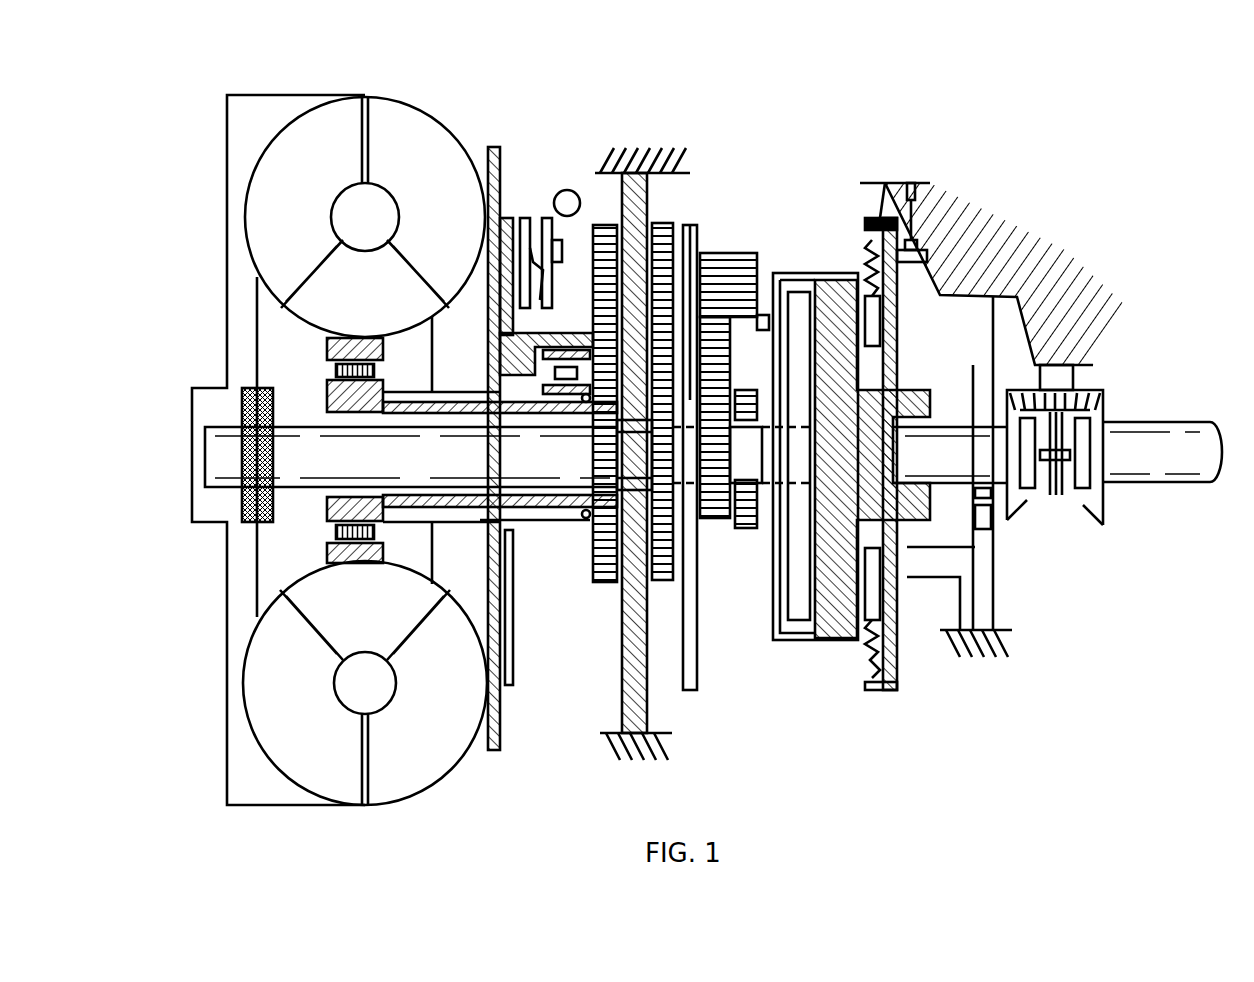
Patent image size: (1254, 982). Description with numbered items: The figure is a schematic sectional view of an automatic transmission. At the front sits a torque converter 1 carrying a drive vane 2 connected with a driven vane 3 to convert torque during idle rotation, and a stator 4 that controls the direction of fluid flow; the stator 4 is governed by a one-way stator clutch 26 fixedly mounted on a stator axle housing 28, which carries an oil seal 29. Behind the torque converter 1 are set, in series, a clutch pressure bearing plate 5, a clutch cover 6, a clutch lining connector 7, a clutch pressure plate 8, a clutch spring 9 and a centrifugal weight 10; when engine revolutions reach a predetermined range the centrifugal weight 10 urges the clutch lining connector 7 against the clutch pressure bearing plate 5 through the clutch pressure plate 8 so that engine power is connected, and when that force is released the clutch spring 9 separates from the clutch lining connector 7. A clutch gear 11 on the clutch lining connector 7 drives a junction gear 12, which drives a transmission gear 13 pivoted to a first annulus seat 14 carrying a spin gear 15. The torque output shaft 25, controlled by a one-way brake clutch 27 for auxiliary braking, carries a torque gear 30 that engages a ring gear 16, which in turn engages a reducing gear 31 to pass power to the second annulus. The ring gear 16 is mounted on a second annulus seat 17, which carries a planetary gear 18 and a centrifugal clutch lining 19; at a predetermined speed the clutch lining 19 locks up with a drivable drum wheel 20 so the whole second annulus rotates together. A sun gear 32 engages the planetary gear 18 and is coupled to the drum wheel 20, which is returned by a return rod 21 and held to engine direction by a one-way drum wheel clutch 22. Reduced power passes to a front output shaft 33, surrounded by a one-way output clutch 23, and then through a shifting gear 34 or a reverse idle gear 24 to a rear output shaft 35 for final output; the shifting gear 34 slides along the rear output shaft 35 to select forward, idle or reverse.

The torque converter 1 is at (242, 333).
The drive vane 2 is at (443, 211).
The driven vane 3 is at (297, 211).
The stator 4 is at (372, 306).
The clutch pressure bearing plate 5 is at (500, 345).
The clutch cover 6 is at (506, 218).
The clutch lining connector 7 is at (485, 240).
The clutch pressure plate 8 is at (527, 218).
The clutch spring 9 is at (540, 275).
The centrifugal weight 10 is at (570, 192).
The clutch gear 11 is at (593, 328).
The junction gear 12 is at (668, 228).
The transmission gear 13 is at (672, 583).
The first annulus seat 14 is at (700, 237).
The spin gear 15 is at (742, 265).
The ring gear 16 is at (775, 275).
The second annulus seat 17 is at (798, 300).
The planetary gear 18 is at (836, 300).
The centrifugal clutch lining 19 is at (868, 250).
The drivable drum wheel 20 is at (886, 218).
The return rod 21 is at (920, 215).
The one-way drum wheel clutch 22 is at (998, 265).
The one-way output clutch 23 is at (996, 390).
The reverse idle gear 24 is at (1075, 392).
The torque output shaft 25 is at (222, 455).
The one-way stator clutch 26 is at (330, 534).
The one-way brake clutch 27 is at (556, 380).
The stator axle housing 28 is at (547, 510).
The oil seal 29 is at (598, 500).
The torque gear 30 is at (717, 498).
The reducing gear 31 is at (745, 522).
The sun gear 32 is at (842, 515).
The front output shaft 33 is at (950, 470).
The shifting gear 34 is at (1055, 498).
The rear output shaft 35 is at (1165, 475).